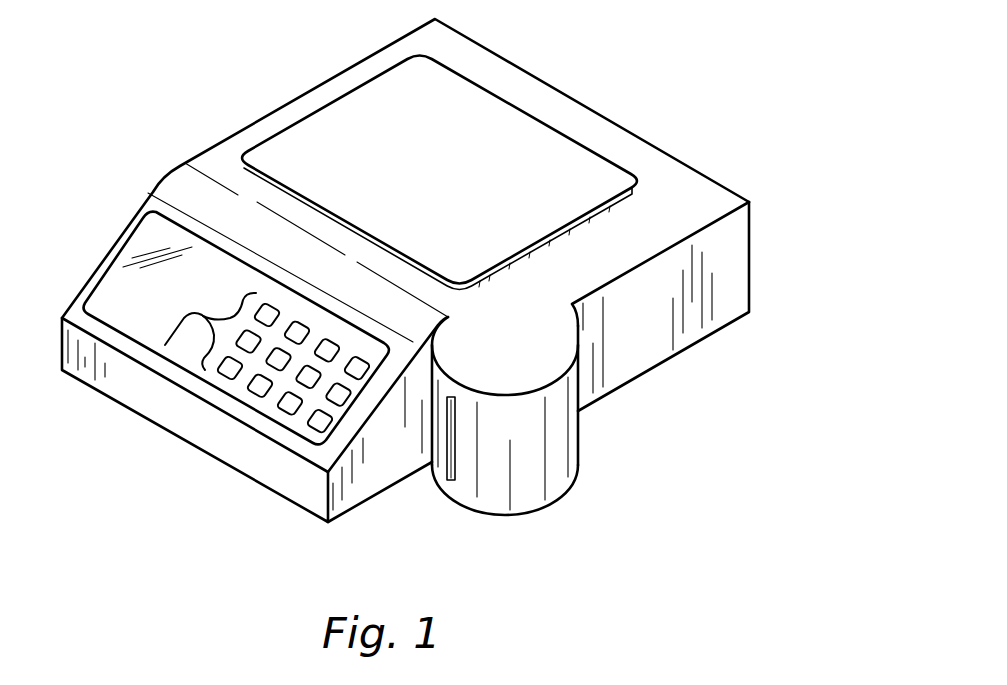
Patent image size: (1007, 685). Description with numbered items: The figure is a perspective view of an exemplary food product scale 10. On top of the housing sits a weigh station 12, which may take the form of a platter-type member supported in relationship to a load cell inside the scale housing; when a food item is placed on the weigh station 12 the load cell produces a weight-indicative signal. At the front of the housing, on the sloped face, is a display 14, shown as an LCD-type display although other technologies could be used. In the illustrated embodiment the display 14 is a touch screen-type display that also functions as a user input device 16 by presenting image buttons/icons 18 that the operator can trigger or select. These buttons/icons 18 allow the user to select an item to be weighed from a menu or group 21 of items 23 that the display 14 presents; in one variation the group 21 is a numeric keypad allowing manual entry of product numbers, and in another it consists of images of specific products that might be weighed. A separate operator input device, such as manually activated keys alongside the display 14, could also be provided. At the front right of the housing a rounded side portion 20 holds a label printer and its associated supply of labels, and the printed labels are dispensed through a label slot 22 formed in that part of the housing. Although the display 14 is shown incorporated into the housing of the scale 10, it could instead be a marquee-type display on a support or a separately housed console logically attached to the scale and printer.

The scale 10 is at (656, 104).
The weigh station 12 is at (345, 152).
The display 14 is at (175, 293).
The user input device 16 is at (240, 427).
The buttons/icons 18 is at (320, 425).
The side portion 20 is at (569, 447).
The group 21 is at (165, 345).
The label slot 22 is at (460, 454).
The items 23 is at (230, 372).